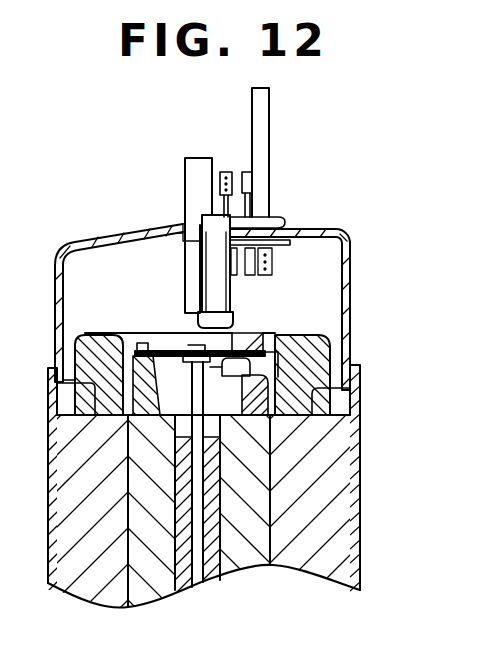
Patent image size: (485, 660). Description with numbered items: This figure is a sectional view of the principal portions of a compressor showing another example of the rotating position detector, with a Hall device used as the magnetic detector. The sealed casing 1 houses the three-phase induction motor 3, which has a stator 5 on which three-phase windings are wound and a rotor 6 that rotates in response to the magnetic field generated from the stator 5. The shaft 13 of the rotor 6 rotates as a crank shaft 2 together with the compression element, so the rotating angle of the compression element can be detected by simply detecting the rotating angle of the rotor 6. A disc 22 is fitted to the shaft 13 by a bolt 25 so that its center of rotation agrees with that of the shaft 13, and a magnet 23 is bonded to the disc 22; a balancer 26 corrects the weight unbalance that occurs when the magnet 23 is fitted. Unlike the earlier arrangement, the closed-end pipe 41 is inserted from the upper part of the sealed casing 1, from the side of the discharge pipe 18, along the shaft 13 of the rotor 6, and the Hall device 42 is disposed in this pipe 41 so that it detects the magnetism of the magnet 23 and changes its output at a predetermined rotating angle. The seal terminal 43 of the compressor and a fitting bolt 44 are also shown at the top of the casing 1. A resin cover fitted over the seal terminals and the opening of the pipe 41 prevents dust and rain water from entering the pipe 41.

The sealed casing 1 is at (340, 240).
The crank shaft 2 is at (183, 582).
The three-phase induction motor 3 is at (330, 528).
The stator 5 is at (345, 487).
The rotor 6 is at (132, 492).
The shaft 13 is at (213, 580).
The discharge pipe 18 is at (185, 178).
The disc 22 is at (167, 345).
The magnet 23 is at (252, 337).
The bolt 25 is at (202, 398).
The balancer 26 is at (138, 337).
The closed-end pipe 41 is at (231, 290).
The Hall device 42 is at (231, 305).
The seal terminal 43 is at (240, 172).
The fitting bolt 44 is at (270, 127).